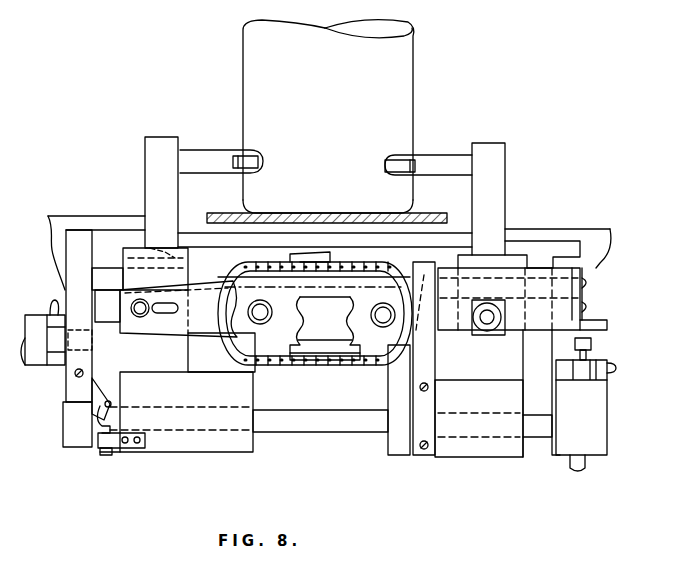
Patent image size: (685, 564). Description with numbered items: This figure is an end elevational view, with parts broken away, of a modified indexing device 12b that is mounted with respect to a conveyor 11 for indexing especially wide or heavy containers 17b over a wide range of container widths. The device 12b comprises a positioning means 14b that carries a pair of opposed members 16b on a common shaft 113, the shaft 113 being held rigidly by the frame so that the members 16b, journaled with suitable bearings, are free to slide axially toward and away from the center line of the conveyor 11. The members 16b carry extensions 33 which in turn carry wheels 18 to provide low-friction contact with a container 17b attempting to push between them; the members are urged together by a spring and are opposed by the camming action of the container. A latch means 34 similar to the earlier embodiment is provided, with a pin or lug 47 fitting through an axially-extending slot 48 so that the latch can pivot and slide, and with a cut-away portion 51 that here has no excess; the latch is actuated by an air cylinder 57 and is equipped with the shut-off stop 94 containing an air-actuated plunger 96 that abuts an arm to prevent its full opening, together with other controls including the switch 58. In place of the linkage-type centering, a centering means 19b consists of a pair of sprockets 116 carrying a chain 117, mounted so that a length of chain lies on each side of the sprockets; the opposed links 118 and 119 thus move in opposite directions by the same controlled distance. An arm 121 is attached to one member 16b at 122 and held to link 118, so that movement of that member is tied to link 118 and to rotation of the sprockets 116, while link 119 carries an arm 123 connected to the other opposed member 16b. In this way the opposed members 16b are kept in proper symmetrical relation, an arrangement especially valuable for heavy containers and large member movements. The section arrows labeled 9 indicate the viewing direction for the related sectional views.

The containers 17b is at (414, 68).
The extensions 33 is at (221, 137).
The wheels 18 is at (263, 162).
The section line 9 is at (323, 158).
The conveyor 11 is at (434, 202).
The indexing device 12b is at (137, 212).
The positioning means 14b is at (528, 220).
The attachment point 122 is at (160, 250).
The arm 121 is at (292, 257).
The link 118 is at (335, 266).
The centering means 19b is at (384, 268).
The sprockets 116 is at (275, 352).
The chain 117 is at (230, 352).
The link 119 is at (313, 366).
The arm 123 is at (345, 372).
The pin or lug 47 is at (142, 318).
The axially-extending slot 48 is at (154, 314).
The air-actuated plunger 96 is at (88, 350).
The stop 94 is at (43, 363).
The switch 58 is at (67, 395).
The cut-away portion 51 is at (490, 333).
The latch means 34 is at (535, 334).
The opposed members 16b is at (196, 452).
The common shaft 113 is at (308, 432).
The air cylinder 57 is at (572, 444).